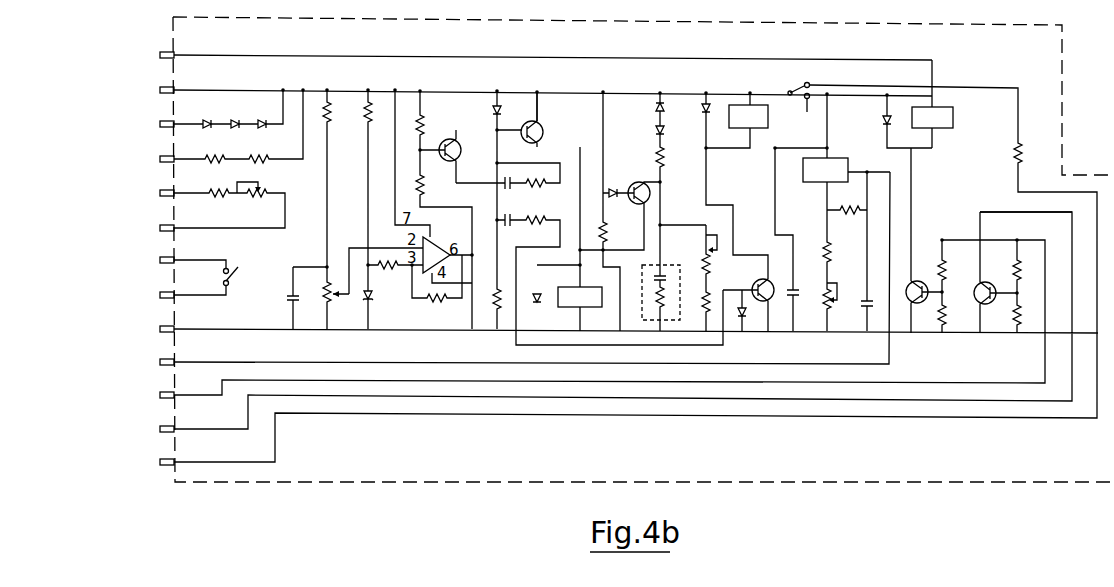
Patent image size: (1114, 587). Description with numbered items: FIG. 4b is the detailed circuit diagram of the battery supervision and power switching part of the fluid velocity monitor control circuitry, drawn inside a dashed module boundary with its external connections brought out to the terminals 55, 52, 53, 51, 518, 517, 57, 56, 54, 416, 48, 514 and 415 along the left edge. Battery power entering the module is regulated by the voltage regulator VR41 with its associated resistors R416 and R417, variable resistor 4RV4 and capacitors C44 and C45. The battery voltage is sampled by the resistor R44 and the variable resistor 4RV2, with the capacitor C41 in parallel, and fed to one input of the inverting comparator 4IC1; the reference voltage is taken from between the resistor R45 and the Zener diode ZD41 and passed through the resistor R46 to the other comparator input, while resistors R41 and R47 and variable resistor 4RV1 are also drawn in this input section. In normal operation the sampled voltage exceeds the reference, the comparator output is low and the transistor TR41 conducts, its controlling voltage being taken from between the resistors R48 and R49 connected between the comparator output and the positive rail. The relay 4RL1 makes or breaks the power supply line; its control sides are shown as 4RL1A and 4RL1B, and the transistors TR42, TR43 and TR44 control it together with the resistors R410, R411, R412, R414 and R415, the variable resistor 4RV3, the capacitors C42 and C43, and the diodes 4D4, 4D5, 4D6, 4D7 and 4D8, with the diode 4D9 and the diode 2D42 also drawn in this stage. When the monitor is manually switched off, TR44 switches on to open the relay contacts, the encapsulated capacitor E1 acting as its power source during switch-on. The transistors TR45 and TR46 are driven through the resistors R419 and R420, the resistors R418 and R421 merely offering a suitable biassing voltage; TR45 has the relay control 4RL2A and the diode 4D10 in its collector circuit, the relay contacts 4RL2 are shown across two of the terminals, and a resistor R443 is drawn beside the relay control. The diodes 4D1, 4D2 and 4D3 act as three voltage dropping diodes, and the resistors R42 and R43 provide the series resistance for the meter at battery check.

The terminal 55 is at (160, 44).
The terminal 52 is at (160, 79).
The terminal 53 is at (160, 113).
The terminal 51 is at (160, 148).
The terminal 518 is at (156, 182).
The terminal 517 is at (156, 217).
The terminal 57 is at (160, 249).
The terminal 56 is at (160, 284).
The terminal 54 is at (160, 318).
The terminal 416 is at (156, 351).
The terminal 48 is at (160, 384).
The terminal 514 is at (156, 418).
The terminal 415 is at (156, 451).
The voltage dropping diode 4D1 is at (209, 120).
The voltage dropping diode 4D2 is at (236, 119).
The voltage dropping diode 4D3 is at (263, 120).
The diode 4D4 is at (492, 112).
The diode 4D5 is at (740, 306).
The diode 4D6 is at (703, 100).
The diode 4D7 is at (655, 131).
The diode 4D8 is at (622, 204).
The diode 4D9 is at (532, 292).
The diode 4D10 is at (882, 118).
The diode 2D42 is at (656, 102).
The Zener diode ZD41 is at (372, 303).
The resistor R41 is at (227, 200).
The resistor R42 is at (221, 156).
The resistor R43 is at (270, 156).
The resistor R44 is at (323, 100).
The resistor R45 is at (367, 120).
The resistor R46 is at (391, 275).
The resistor R47 is at (433, 310).
The resistor R48 is at (418, 112).
The resistor R49 is at (424, 186).
The resistor R410 is at (495, 292).
The resistor R411 is at (518, 186).
The resistor R412 is at (548, 224).
The resistor R414 is at (623, 234).
The resistor R415 is at (708, 314).
The resistor R416 is at (824, 246).
The resistor R417 is at (848, 202).
The resistor R418 is at (946, 313).
The resistor R419 is at (940, 262).
The resistor R420 is at (1020, 262).
The resistor R421 is at (1020, 320).
The resistor R443 is at (1016, 146).
The variable resistor 4RV1 is at (262, 191).
The variable resistor 4RV2 is at (322, 266).
The variable resistor 4RV3 is at (689, 256).
The variable resistor 4RV4 is at (823, 312).
The capacitor C41 is at (291, 304).
The capacitor C42 is at (503, 181).
The capacitor C43 is at (503, 223).
The capacitor C44 is at (796, 289).
The capacitor C45 is at (866, 298).
The transistor TR41 is at (461, 152).
The transistor TR42 is at (554, 135).
The transistor TR43 is at (768, 278).
The transistor TR44 is at (645, 184).
The transistor TR45 is at (910, 303).
The transistor TR46 is at (990, 281).
The inverting comparator 4IC1 is at (451, 262).
The relay 4RL1 is at (797, 84).
The relay control side 4RL1A is at (731, 118).
The relay control side 4RL1B is at (557, 295).
The relay contacts 4RL2 is at (242, 279).
The relay control 4RL2A is at (957, 120).
The voltage regulator VR41 is at (813, 181).
The encapsulated capacitor E1 is at (645, 308).